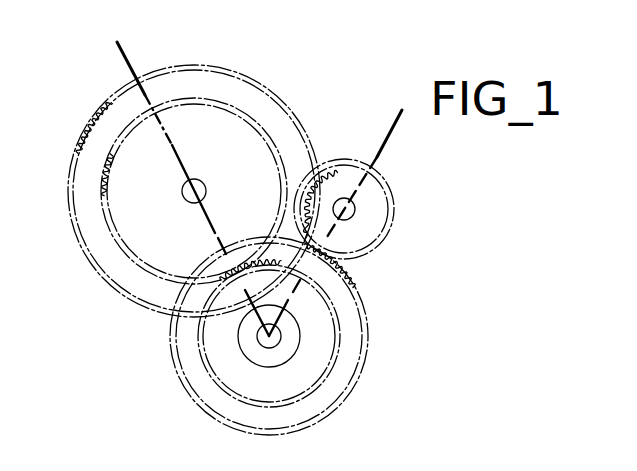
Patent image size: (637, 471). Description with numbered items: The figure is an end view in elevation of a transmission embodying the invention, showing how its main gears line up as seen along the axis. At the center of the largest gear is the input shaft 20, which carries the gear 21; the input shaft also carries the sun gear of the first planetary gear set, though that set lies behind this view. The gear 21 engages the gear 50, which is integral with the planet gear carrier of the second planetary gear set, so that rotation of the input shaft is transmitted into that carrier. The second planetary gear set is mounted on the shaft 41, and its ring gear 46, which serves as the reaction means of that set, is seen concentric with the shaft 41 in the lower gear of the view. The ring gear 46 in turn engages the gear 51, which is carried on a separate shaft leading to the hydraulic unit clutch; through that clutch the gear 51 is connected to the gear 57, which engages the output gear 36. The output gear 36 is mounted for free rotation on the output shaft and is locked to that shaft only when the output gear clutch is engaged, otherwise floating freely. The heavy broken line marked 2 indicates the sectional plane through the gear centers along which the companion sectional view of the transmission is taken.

The section line 2- 2 is at (134, 46).
The input shaft 20 is at (198, 179).
The gear 21 is at (144, 196).
The output gear 36 is at (86, 130).
The shaft 41 is at (269, 348).
The ring gear 46 is at (342, 290).
The gear 50 is at (237, 288).
The gear 51 is at (350, 244).
The gear 57 is at (347, 156).